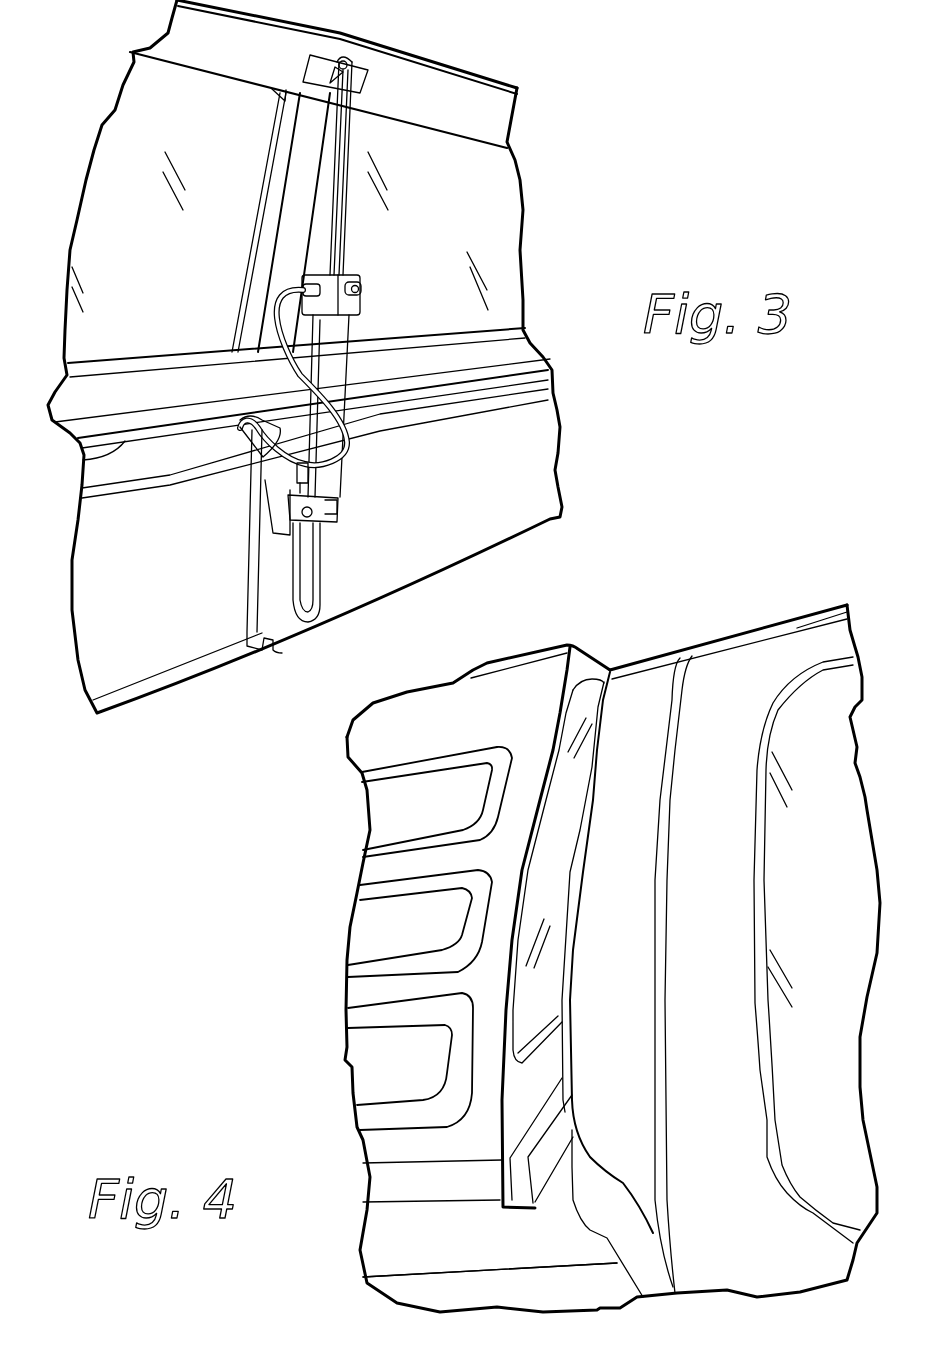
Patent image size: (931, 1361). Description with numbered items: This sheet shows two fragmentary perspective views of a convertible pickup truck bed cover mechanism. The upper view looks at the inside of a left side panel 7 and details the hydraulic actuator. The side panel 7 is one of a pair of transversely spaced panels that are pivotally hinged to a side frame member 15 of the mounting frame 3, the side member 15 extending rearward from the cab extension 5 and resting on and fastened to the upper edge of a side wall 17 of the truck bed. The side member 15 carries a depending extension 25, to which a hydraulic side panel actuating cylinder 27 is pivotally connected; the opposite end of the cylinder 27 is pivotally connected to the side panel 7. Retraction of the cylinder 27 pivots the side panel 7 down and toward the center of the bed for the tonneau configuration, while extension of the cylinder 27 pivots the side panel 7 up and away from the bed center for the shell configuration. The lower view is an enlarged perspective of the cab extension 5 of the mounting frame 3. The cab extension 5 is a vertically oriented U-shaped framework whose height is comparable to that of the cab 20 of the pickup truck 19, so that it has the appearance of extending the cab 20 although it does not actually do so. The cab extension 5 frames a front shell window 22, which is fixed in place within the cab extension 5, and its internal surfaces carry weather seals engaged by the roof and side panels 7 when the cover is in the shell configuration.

In FIG. 4, the mounting frame 3 is at (378, 1250).
In FIG. 4, the pickup cab extension 5 is at (382, 822).
In FIG. 3, the side panel 7 is at (500, 208).
In FIG. 3, the side frame member 15 is at (82, 457).
In FIG. 3, the side wall 17 is at (87, 653).
In FIG. 4, the side wall 17 is at (397, 1292).
In FIG. 4, the pickup truck 19 is at (796, 626).
In FIG. 4, the cab 20 is at (662, 662).
In FIG. 4, the front shell window 22 is at (541, 980).
In FIG. 3, the depending extension 25 is at (267, 592).
In FIG. 3, the hydraulic side panel actuating cylinder 27 is at (337, 367).